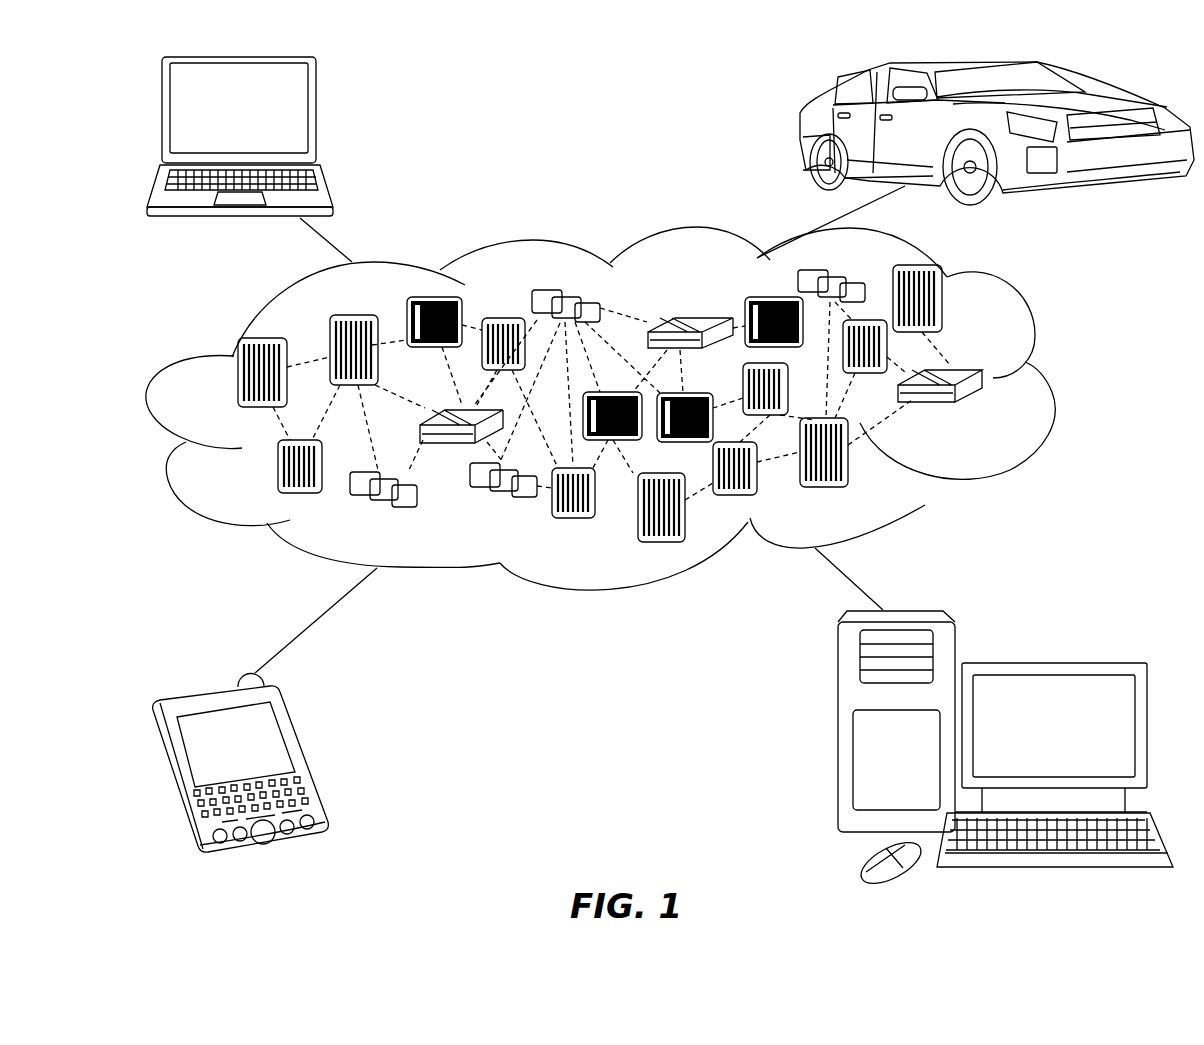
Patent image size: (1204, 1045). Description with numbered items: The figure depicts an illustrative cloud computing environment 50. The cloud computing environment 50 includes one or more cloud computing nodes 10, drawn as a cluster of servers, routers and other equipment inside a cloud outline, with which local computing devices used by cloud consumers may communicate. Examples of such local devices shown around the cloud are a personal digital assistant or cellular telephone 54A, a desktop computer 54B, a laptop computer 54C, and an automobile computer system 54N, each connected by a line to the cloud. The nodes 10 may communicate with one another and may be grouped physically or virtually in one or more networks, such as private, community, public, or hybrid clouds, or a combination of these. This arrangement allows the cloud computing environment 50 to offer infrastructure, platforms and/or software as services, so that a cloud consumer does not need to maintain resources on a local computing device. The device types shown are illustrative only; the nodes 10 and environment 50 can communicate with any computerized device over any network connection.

The cloud computing node 10 is at (990, 413).
The cloud computing environment 50 is at (1048, 383).
The personal digital assistant or cellular telephone 54A is at (303, 753).
The desktop computer 54B is at (1048, 663).
The laptop computer 54C is at (320, 116).
The automobile computer system 54N is at (806, 133).